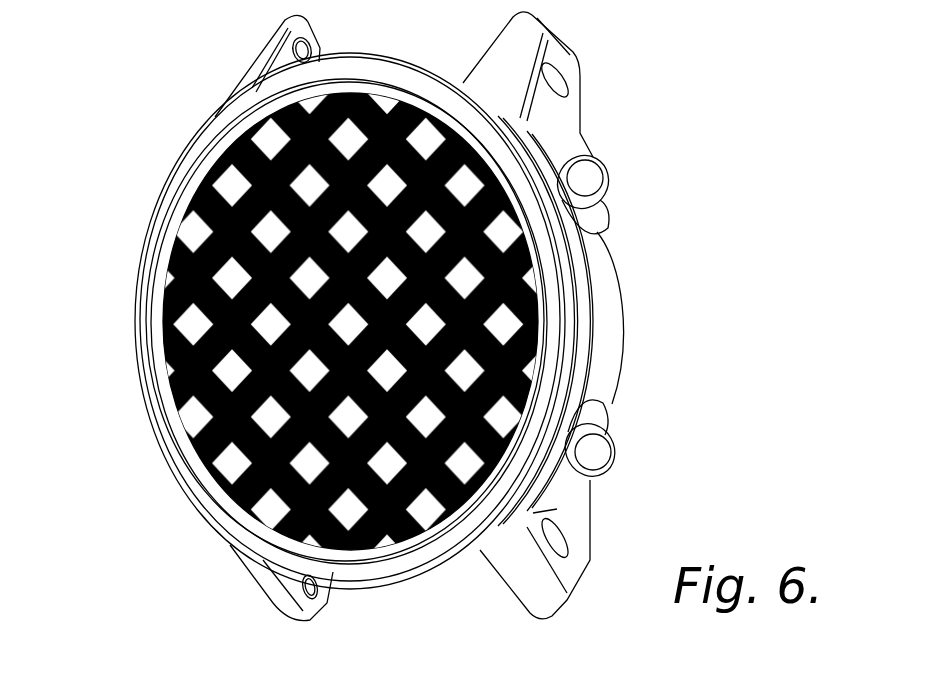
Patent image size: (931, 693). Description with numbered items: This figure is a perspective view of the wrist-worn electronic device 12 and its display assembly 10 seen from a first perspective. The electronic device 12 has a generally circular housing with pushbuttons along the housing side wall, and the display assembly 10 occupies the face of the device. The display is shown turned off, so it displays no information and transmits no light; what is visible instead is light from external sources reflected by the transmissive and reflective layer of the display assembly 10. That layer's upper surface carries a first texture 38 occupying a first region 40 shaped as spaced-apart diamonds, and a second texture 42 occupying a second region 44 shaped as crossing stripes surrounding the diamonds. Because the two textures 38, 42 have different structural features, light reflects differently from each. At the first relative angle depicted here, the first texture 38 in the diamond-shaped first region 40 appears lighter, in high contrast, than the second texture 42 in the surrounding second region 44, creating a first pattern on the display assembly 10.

The display assembly 10 is at (420, 316).
The wrist-worn electronic device 12 is at (636, 100).
The first texture 38 is at (453, 320).
The first region 40 is at (510, 405).
The second texture 42 is at (454, 321).
The second region 44 is at (546, 297).